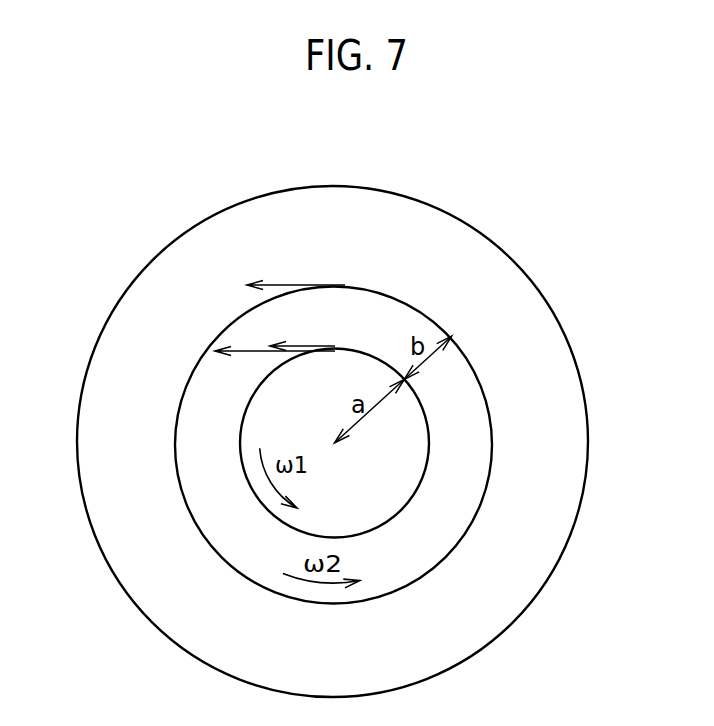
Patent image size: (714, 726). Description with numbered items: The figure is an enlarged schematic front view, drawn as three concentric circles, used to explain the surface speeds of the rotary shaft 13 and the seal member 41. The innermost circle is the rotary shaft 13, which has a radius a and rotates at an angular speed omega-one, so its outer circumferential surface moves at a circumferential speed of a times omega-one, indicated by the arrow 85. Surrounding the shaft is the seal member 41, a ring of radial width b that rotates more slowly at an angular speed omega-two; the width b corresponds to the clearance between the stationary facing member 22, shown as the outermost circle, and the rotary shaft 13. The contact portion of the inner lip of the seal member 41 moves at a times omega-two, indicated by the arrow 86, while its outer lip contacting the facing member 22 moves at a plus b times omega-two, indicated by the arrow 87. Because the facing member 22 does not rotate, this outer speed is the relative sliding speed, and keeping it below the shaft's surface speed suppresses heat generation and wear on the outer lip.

The rotary shaft 13 is at (393, 463).
The seal member 41 is at (433, 527).
The facing member 22 is at (477, 613).
The arrow 85 is at (243, 351).
The arrow 86 is at (305, 346).
The arrow 87 is at (270, 285).